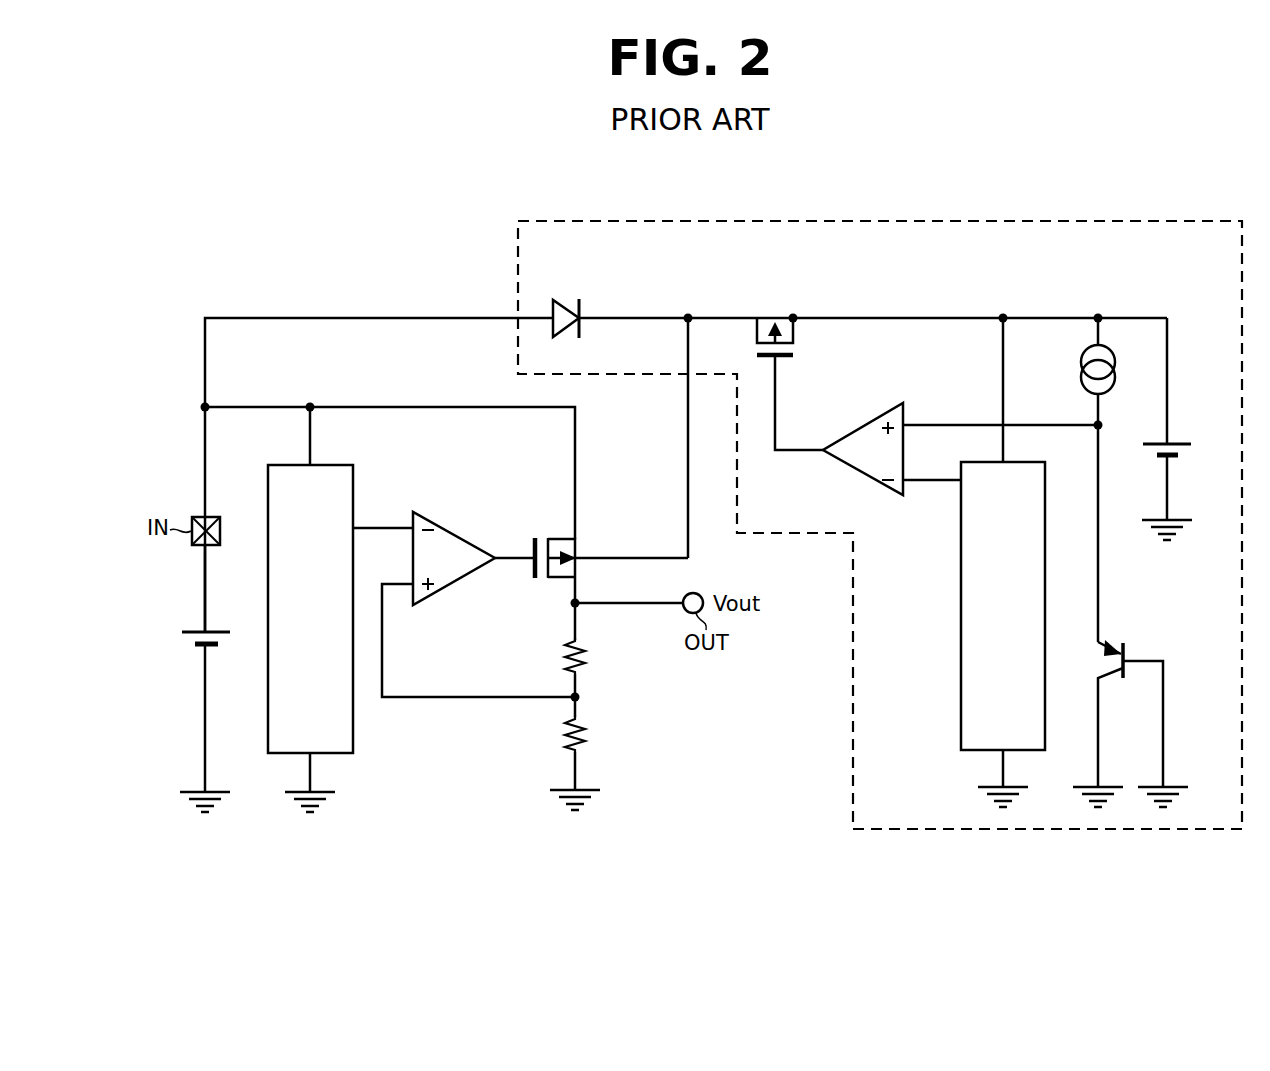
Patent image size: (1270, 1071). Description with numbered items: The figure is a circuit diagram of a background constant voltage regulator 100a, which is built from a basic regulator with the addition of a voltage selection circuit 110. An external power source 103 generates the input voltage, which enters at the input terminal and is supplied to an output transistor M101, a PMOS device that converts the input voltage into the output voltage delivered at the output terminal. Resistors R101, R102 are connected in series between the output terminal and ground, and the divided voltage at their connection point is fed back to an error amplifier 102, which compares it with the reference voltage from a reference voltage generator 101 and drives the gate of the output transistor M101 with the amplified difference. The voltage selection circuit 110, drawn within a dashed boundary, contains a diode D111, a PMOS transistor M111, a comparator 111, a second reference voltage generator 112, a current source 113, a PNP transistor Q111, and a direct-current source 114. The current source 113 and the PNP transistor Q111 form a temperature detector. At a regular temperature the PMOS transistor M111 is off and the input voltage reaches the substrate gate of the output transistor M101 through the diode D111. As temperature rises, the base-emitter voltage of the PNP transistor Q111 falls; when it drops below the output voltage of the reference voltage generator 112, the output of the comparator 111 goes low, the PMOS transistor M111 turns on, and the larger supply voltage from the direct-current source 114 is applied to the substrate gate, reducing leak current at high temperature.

The constant voltage regulator 100a is at (882, 182).
The voltage selection circuit 110 is at (1070, 218).
The reference voltage generator 101 is at (352, 452).
The error amplifier 102 is at (448, 506).
The external power source 103 is at (220, 631).
The comparator 111 is at (870, 420).
The reference voltage generator 112 is at (960, 552).
The current source 113 is at (1081, 376).
The direct-current source 114 is at (1178, 459).
The diode D111 is at (575, 287).
The PMOS transistor M111 is at (809, 382).
The output transistor M101 is at (603, 459).
The PNP transistor Q111 is at (1130, 711).
The resistor R101 is at (606, 650).
The resistor R102 is at (599, 752).